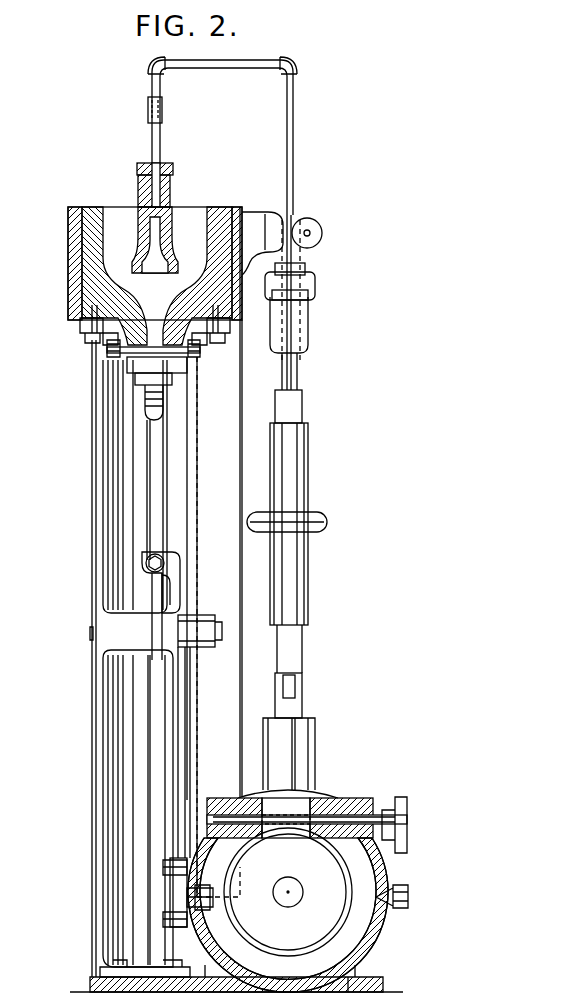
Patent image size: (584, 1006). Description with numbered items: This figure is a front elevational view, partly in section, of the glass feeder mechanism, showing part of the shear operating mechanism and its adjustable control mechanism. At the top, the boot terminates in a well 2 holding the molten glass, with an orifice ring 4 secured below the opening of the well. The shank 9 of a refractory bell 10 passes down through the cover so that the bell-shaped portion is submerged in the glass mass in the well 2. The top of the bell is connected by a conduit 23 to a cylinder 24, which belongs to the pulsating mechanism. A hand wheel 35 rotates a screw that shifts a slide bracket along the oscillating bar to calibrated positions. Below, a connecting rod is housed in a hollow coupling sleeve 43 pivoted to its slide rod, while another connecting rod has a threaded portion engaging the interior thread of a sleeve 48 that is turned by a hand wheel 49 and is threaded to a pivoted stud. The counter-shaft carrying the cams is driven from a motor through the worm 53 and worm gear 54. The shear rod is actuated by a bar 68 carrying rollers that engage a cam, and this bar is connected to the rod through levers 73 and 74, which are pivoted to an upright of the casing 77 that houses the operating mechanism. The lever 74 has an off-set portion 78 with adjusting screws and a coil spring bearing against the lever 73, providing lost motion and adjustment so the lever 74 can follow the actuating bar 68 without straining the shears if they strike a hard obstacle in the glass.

The well 2 is at (72, 328).
The orifice ring 4 is at (125, 360).
The shank 9 is at (172, 185).
The bell 10 is at (170, 258).
The conduit 23 is at (293, 148).
The cylinder 24 is at (308, 333).
The hand wheel 35 is at (322, 233).
The hollow coupling sleeve 43 is at (290, 590).
The sleeve 48 is at (308, 470).
The hand wheel 49 is at (328, 518).
The worm 53 is at (318, 810).
The worm gear 54 is at (337, 883).
The bar 68 is at (172, 892).
The lever 73 is at (152, 498).
The lever 74 is at (170, 702).
The casing 77 is at (317, 790).
The off-set portion 78 is at (143, 565).